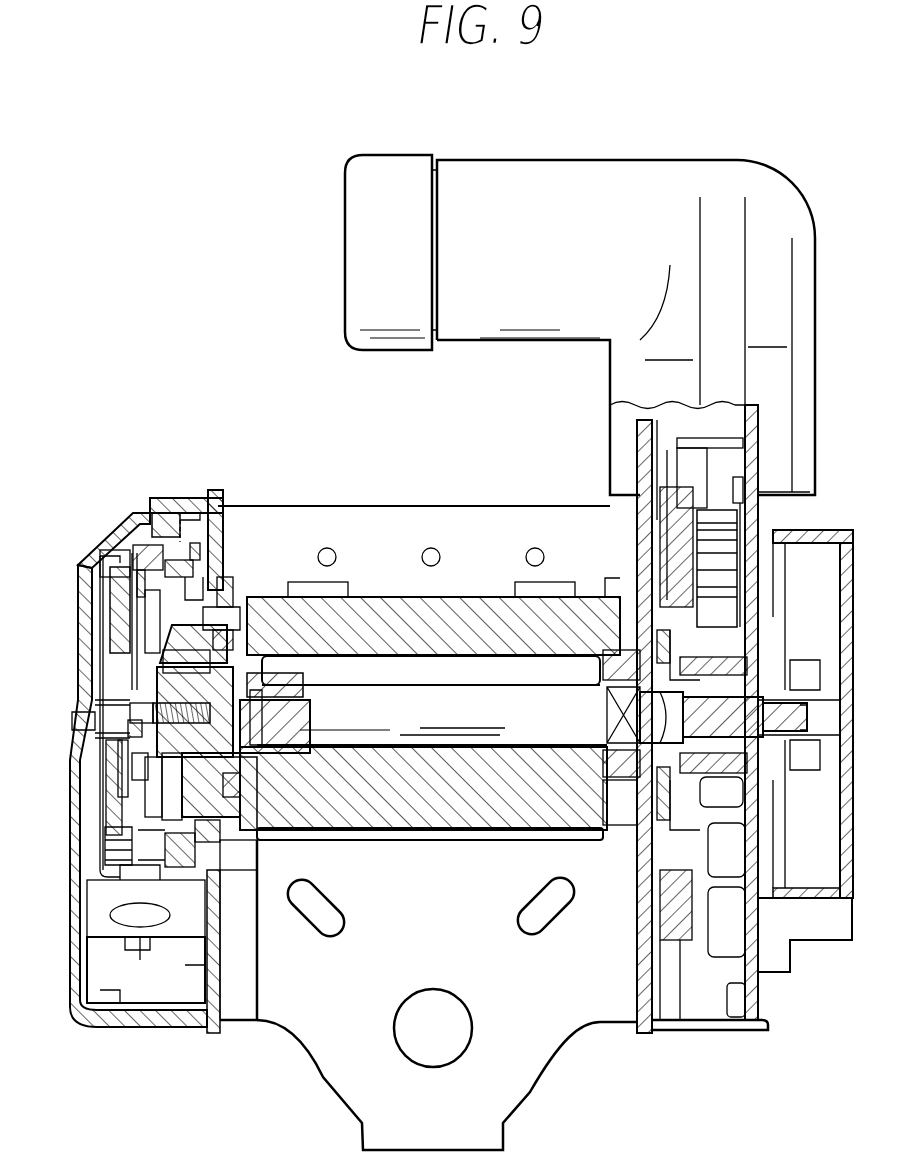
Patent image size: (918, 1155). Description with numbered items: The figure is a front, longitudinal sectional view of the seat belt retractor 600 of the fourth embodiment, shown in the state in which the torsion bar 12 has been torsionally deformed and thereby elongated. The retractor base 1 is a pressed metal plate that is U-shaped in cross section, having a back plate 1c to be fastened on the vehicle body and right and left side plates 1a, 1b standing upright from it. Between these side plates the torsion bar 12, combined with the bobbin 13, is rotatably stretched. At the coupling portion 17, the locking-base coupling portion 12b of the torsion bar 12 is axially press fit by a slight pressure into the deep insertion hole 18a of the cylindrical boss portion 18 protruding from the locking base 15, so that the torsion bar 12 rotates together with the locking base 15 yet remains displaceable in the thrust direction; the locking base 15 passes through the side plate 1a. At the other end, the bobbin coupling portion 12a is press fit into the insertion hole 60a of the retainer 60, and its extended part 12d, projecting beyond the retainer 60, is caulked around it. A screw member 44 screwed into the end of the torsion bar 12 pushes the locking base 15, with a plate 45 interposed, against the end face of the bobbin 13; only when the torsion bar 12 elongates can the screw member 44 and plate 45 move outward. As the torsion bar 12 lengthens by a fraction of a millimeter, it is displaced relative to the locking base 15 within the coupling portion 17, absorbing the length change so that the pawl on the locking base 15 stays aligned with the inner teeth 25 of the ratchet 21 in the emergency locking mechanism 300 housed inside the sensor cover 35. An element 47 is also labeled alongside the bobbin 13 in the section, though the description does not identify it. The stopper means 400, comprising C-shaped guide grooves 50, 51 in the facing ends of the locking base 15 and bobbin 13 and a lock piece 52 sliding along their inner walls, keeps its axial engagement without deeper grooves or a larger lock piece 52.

The retractor base 1 is at (470, 530).
The side plate 1a is at (227, 958).
The side plate 1b is at (637, 950).
The back plate 1c is at (530, 1068).
The torsion bar 12 is at (477, 705).
The bobbin coupling portion 12a is at (607, 723).
The locking-base coupling portion 12b is at (300, 730).
The extended part 12d is at (760, 682).
The bobbin 13 is at (410, 622).
The locking base 15 is at (183, 610).
The coupling portion 17 is at (275, 702).
The cylindrical boss portion 18 is at (290, 612).
The insertion hole 18a is at (337, 830).
The ratchet 21 is at (150, 853).
The inner teeth 25 is at (100, 535).
The sensor cover 35 is at (125, 515).
The screw member 44 is at (160, 750).
The plate 45 is at (110, 625).
The permanent magnet 47 is at (270, 668).
The guide groove 50 is at (222, 955).
The guide groove 51 is at (230, 925).
The lock piece 52 is at (258, 600).
The retainer 60 is at (612, 790).
The insertion hole 60a is at (600, 700).
The emergency locking mechanism 300 is at (140, 515).
The stopper means 400 is at (250, 575).
The seat belt retractor 600 is at (432, 505).